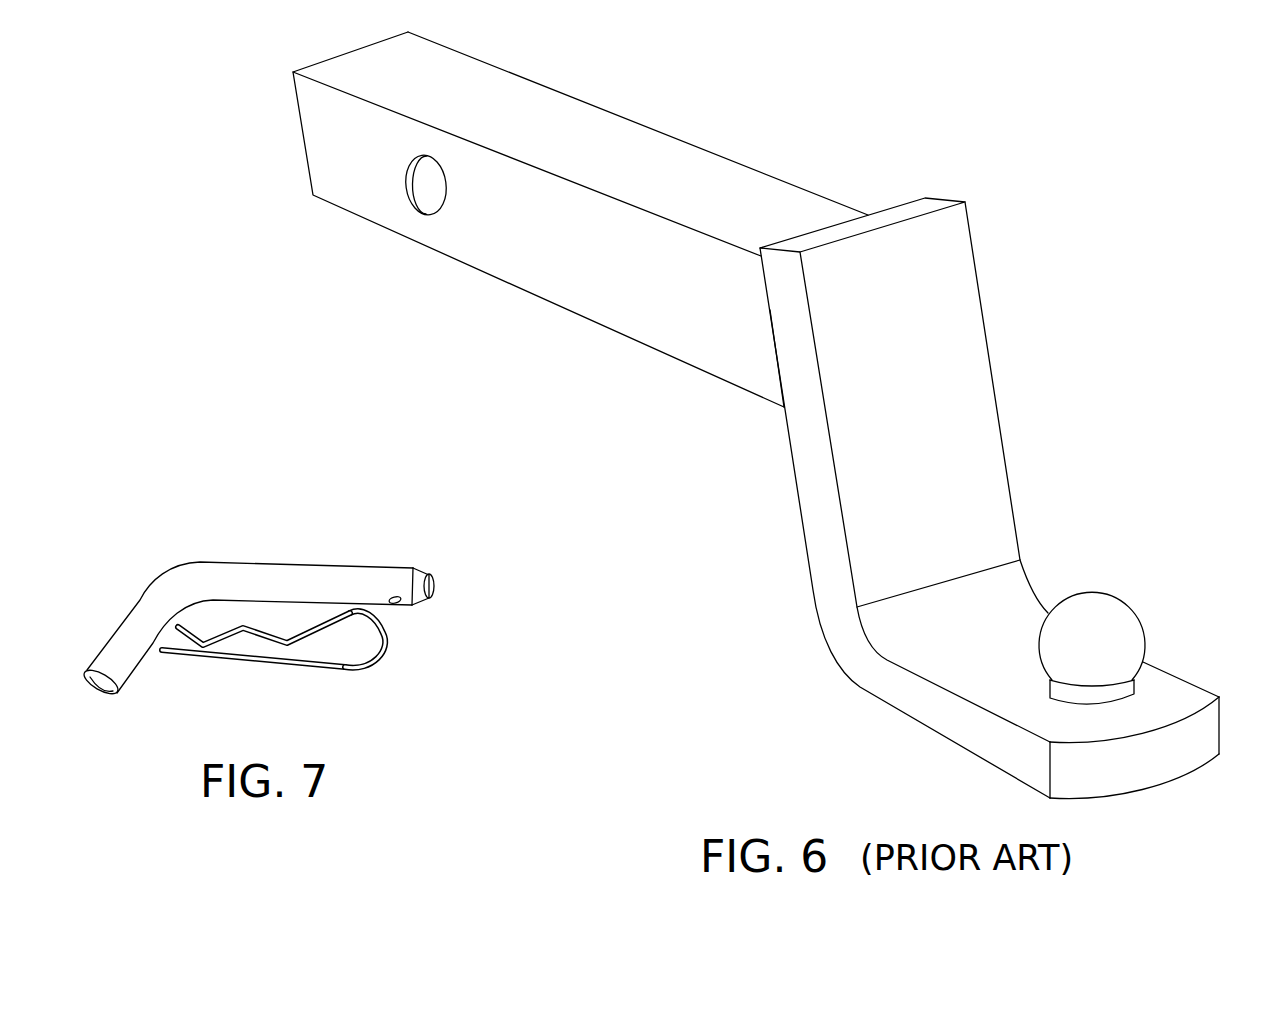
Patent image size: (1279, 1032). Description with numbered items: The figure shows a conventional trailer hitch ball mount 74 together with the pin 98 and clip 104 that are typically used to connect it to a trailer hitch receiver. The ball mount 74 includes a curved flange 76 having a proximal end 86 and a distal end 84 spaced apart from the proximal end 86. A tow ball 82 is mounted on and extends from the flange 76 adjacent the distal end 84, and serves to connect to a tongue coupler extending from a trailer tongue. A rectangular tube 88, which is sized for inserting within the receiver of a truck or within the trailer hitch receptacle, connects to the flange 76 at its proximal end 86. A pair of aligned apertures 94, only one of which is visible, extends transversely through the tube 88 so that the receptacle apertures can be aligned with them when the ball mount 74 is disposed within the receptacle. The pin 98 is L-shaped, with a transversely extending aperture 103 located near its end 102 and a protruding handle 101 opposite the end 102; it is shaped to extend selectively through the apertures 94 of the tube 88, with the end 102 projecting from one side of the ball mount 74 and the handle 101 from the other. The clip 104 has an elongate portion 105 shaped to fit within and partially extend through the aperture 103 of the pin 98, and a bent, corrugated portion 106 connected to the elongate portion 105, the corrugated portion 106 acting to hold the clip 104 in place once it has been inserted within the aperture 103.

In FIG. 6, the ball mount 74 is at (1000, 202).
In FIG. 6, the curved flange 76 is at (1029, 509).
In FIG. 6, the tow ball 82 is at (1107, 595).
In FIG. 6, the distal end 84 is at (1197, 718).
In FIG. 6, the proximal end 86 is at (772, 330).
In FIG. 6, the rectangular tube 88 is at (735, 121).
In FIG. 6, the aligned apertures 94 is at (430, 190).
In FIG. 7, the pin 98 is at (277, 600).
In FIG. 7, the handle 101 is at (122, 623).
In FIG. 7, the end 102 is at (422, 570).
In FIG. 7, the aperture 103 is at (395, 607).
In FIG. 7, the clip 104 is at (276, 668).
In FIG. 7, the elongate portion 105 is at (170, 657).
In FIG. 7, the corrugated portion 106 is at (254, 637).